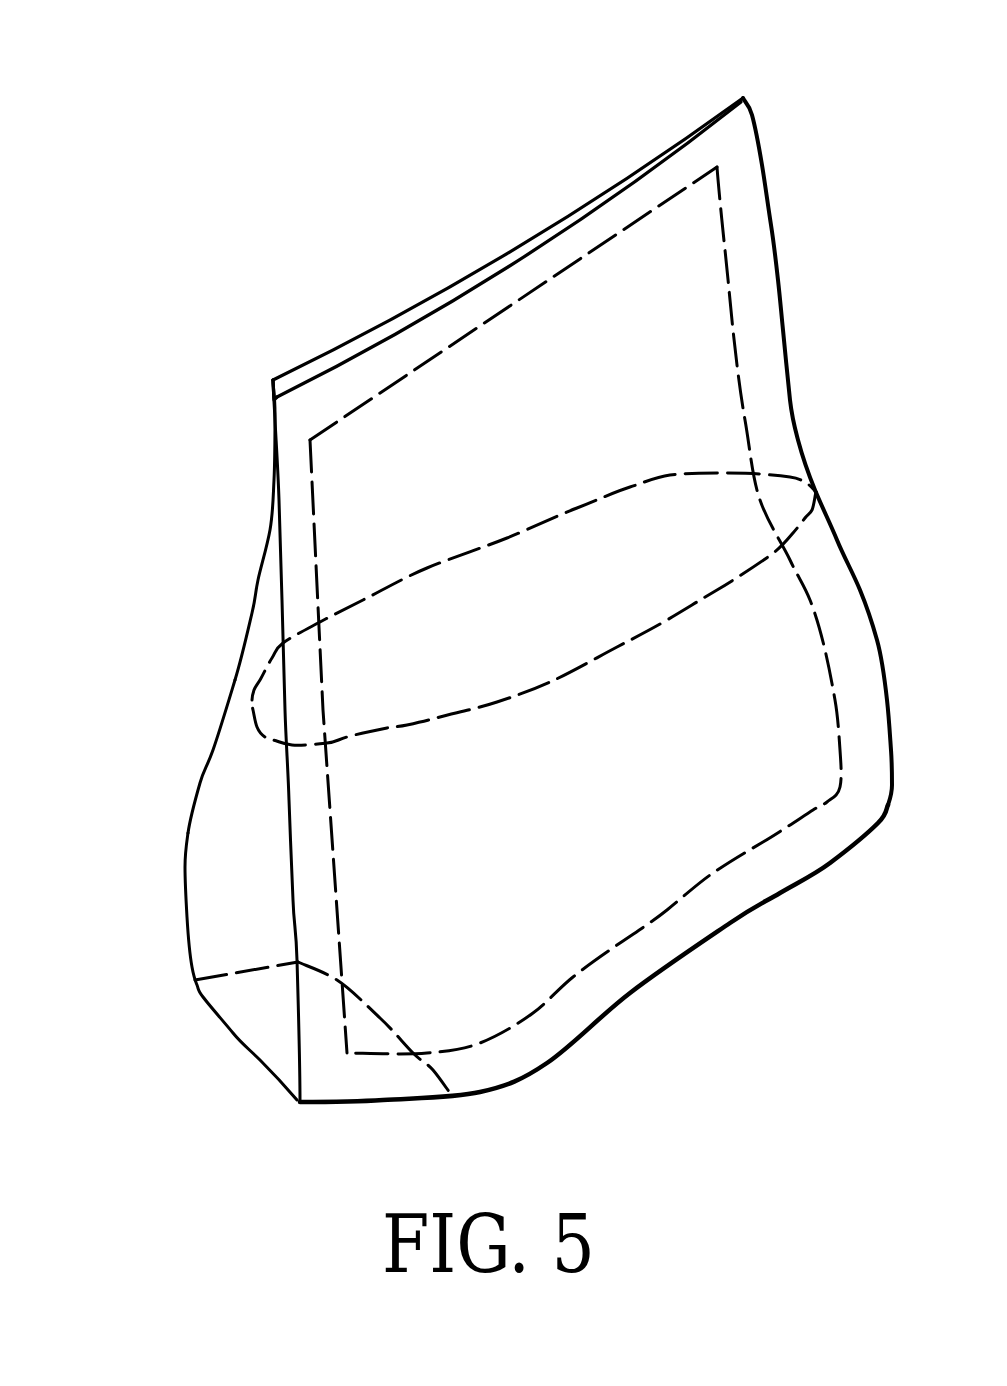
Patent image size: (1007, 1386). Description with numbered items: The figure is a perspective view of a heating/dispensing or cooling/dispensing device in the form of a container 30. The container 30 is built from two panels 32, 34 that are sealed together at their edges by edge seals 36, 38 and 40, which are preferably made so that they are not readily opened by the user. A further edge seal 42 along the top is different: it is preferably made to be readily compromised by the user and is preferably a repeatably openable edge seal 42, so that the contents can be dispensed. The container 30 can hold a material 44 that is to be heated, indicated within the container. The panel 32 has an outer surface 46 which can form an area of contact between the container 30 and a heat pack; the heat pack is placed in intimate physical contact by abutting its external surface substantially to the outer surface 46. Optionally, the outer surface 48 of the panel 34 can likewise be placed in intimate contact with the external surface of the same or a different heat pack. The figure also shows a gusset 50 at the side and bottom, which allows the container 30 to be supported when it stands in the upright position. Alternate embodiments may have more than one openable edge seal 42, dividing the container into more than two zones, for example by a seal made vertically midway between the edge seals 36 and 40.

The container 30 is at (318, 203).
The panel 32 is at (680, 813).
The panel 34 is at (227, 787).
The edge seal 36 is at (757, 273).
The edge seal 38 is at (618, 975).
The edge seal 40 is at (219, 530).
The openable edge seal 42 is at (681, 125).
The material 44 is at (432, 632).
The outer surface 46 is at (727, 520).
The outer surface 48 is at (210, 863).
The gusset 50 is at (259, 985).